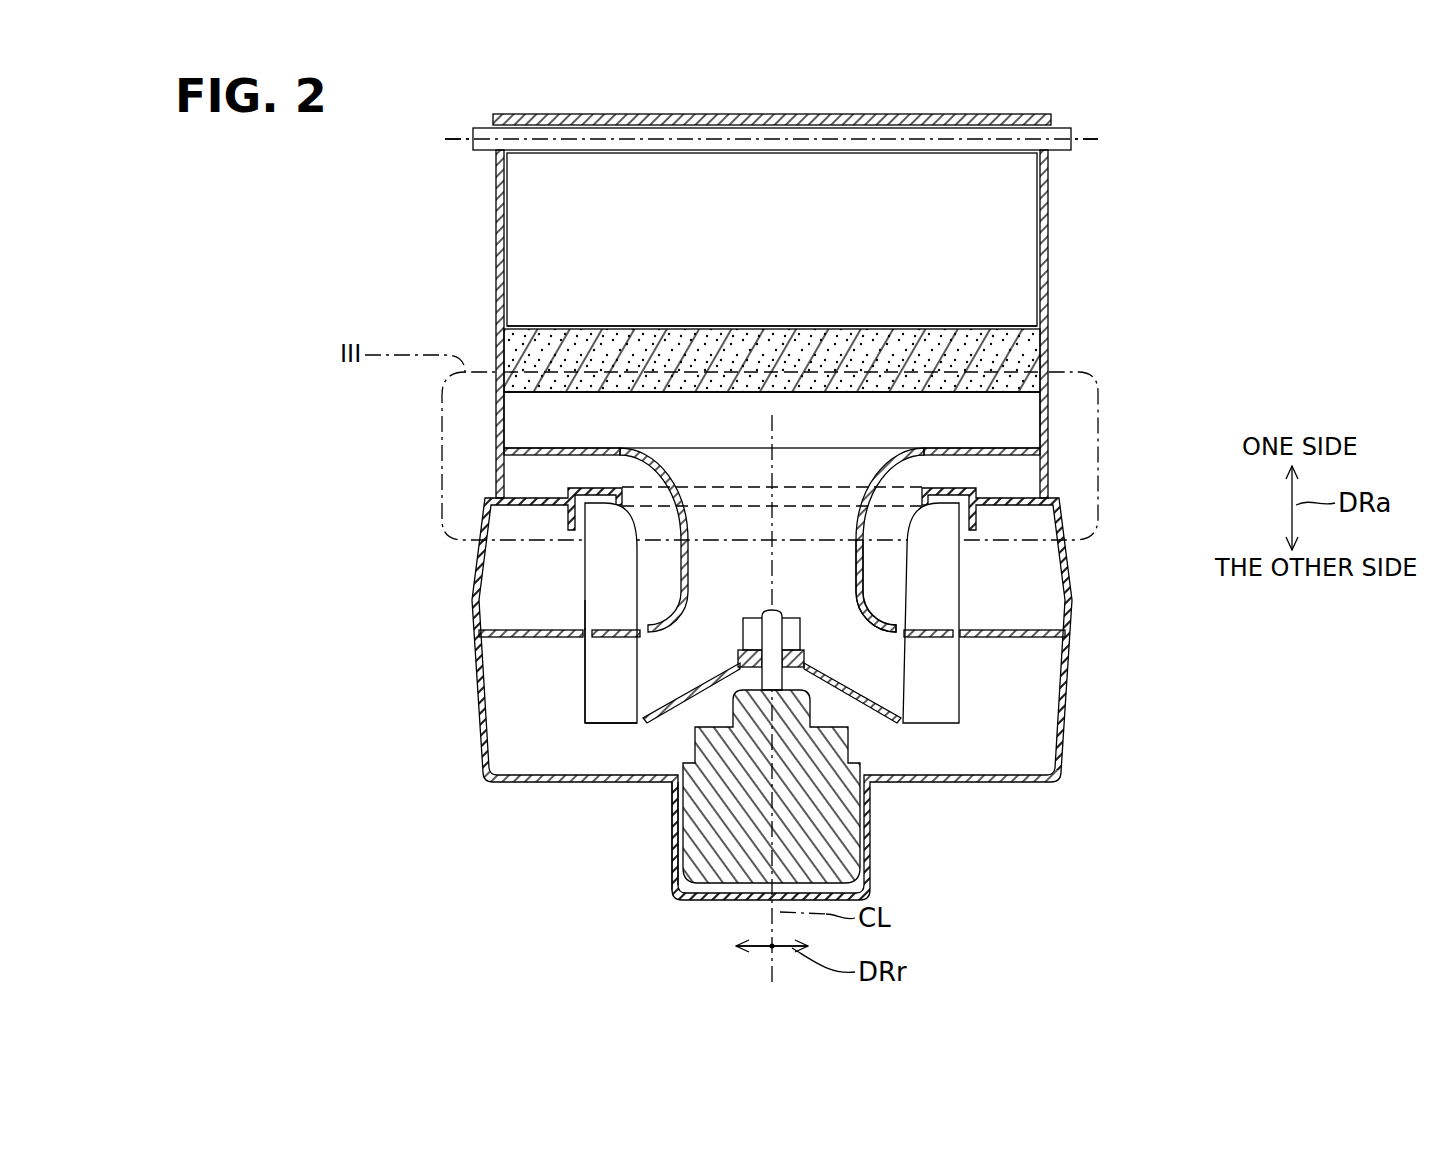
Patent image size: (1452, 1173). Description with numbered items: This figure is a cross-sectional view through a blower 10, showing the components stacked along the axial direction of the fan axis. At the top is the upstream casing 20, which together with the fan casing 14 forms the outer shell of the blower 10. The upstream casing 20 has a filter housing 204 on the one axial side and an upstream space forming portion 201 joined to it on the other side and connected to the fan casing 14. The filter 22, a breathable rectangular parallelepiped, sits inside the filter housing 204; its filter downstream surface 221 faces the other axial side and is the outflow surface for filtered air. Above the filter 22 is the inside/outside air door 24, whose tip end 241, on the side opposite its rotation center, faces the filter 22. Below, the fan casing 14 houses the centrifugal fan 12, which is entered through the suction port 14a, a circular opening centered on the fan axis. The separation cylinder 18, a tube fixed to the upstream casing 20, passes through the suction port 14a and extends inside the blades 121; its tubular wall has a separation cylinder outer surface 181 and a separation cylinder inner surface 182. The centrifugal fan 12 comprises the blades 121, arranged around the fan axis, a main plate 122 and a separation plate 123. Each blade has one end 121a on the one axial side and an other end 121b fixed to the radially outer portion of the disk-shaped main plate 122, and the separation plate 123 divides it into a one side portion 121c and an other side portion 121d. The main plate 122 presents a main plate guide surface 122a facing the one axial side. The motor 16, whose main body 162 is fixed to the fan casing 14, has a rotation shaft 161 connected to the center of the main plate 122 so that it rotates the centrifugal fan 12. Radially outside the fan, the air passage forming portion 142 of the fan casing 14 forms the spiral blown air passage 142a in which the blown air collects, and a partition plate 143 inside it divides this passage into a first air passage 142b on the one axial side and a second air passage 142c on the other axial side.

The blower 10 is at (1136, 119).
The centrifugal fan 12 is at (577, 706).
The blades 121 is at (586, 717).
The one end 121a is at (585, 488).
The other end 121b is at (623, 725).
The one side portion 121c is at (602, 611).
The other side portion 121d is at (602, 667).
The main plate 122 is at (881, 717).
The main plate guide surface 122a is at (647, 722).
The separation plate 123 is at (612, 640).
The fan casing 14 is at (506, 792).
The suction port 14a is at (649, 500).
The air passage forming portion 142 is at (476, 742).
The blown air passage 142a is at (1008, 706).
The first air passage 142b is at (1036, 591).
The second air passage 142c is at (1040, 673).
The partition plate 143 is at (1031, 630).
The motor 16 is at (690, 898).
The rotation shaft 161 is at (686, 858).
The main body 162 is at (842, 858).
The separation cylinder 18 is at (684, 563).
The separation cylinder outer surface 181 is at (862, 573).
The separation cylinder inner surface 182 is at (853, 557).
The upstream casing 20 is at (1210, 333).
The upstream space forming portion 201 is at (1051, 432).
The filter housing 204 is at (1051, 358).
The filter 22 is at (1048, 343).
The filter downstream surface 221 is at (528, 393).
The inside/outside air door 24 is at (525, 211).
The tip end 241 is at (520, 335).